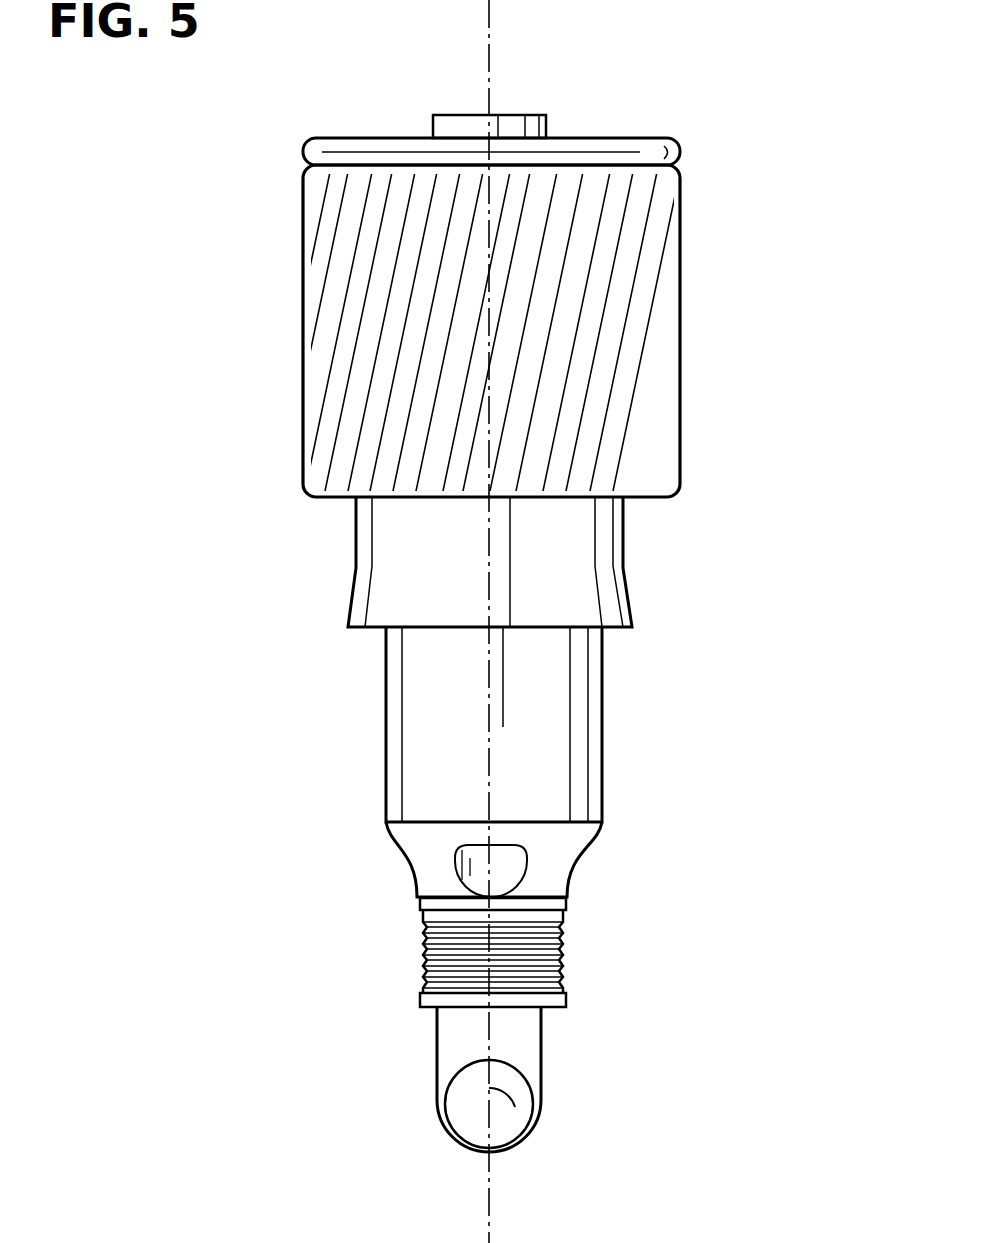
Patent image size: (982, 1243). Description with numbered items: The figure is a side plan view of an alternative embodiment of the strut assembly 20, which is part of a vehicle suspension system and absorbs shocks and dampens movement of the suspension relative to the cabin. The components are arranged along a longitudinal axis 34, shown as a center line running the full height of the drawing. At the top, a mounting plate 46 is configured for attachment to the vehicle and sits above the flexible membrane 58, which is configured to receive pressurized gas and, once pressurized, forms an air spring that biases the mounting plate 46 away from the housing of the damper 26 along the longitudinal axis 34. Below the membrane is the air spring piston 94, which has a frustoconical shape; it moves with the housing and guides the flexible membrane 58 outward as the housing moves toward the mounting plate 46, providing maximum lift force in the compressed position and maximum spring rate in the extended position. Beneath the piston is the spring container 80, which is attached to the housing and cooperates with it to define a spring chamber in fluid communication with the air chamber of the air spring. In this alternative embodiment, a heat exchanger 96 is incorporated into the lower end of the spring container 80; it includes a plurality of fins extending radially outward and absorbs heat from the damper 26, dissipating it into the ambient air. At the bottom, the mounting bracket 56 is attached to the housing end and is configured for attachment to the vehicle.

The strut assembly 20 is at (740, 161).
The damper 26 is at (374, 728).
The longitudinal axis 34 is at (515, 1105).
The mounting plate 46 is at (618, 137).
The mounting bracket 56 is at (437, 1050).
The flexible membrane 58 is at (682, 368).
The spring container 80 is at (602, 698).
The air spring piston 94 is at (625, 552).
The heat exchanger 96 is at (567, 952).